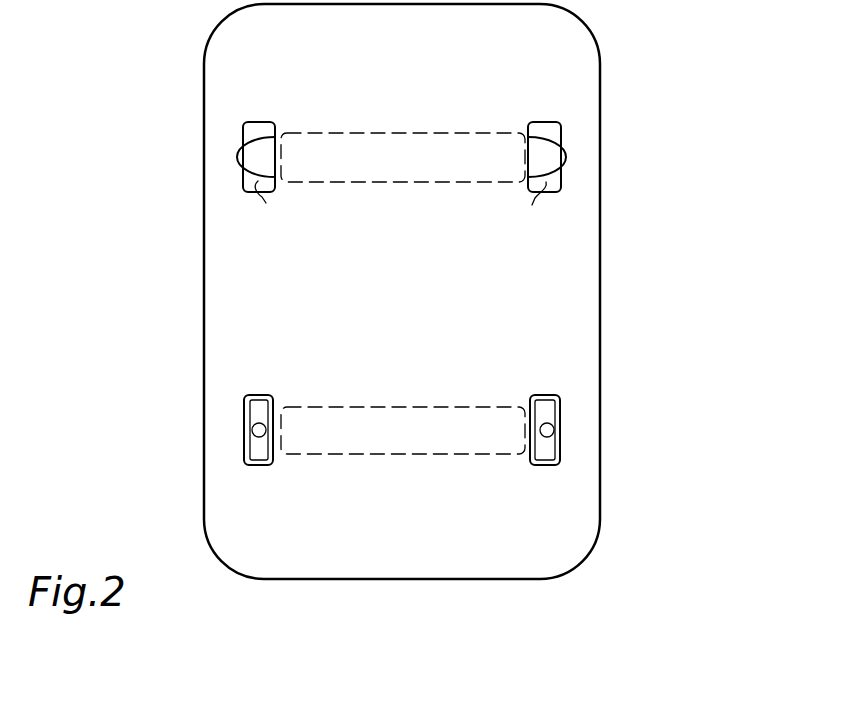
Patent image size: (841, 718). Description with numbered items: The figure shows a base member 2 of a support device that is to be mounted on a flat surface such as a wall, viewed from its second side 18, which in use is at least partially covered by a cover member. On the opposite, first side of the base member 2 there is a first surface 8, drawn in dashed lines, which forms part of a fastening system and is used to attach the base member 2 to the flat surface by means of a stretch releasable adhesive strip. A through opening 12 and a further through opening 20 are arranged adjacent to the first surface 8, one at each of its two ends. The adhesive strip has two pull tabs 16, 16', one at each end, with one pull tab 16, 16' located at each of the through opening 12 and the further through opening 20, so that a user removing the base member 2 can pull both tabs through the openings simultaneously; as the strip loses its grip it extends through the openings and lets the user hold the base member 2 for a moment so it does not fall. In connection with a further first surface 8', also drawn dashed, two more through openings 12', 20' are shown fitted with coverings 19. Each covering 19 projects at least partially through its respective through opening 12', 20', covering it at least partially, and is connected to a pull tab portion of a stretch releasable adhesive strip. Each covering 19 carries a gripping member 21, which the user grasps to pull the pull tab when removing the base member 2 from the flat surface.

The base member 2 is at (660, 96).
The second side 18 is at (272, 283).
The first surface 8 is at (403, 157).
The further first surface 8' is at (403, 430).
The pull tab 16 is at (551, 135).
The pull tab 16' is at (254, 127).
The further through opening 20 is at (270, 212).
The through opening 20' is at (260, 398).
The through opening 12 is at (529, 212).
The through opening 12' is at (551, 397).
The gripping member 21 is at (252, 430).
The covering 19 is at (262, 452).